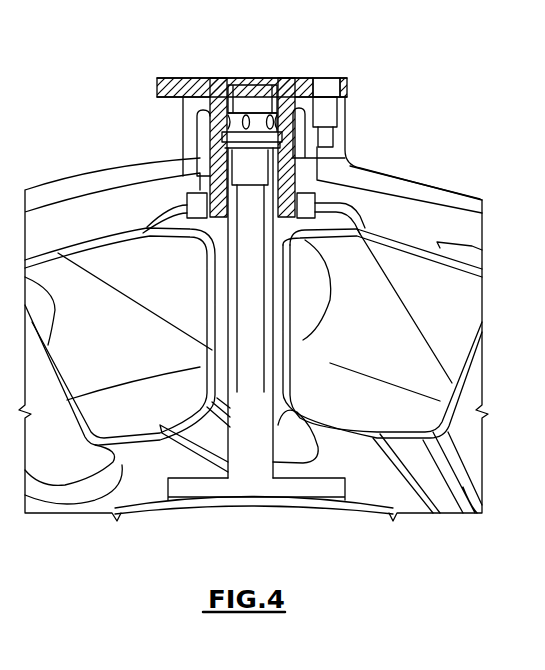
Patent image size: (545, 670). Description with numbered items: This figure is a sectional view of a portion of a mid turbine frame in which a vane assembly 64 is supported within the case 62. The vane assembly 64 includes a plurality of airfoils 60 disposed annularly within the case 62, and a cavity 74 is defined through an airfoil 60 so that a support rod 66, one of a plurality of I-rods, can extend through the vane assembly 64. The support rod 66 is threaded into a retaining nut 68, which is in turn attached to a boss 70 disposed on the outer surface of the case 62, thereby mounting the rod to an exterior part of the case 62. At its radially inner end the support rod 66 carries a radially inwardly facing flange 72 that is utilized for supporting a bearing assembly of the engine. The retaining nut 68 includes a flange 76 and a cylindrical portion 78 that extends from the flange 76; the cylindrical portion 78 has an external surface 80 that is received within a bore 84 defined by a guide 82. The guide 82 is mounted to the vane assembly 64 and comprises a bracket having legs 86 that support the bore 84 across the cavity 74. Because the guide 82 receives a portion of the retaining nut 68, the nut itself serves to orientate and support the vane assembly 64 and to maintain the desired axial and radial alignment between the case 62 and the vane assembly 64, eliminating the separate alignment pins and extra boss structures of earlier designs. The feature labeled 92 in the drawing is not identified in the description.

The airfoils 60 is at (205, 335).
The case 62 is at (88, 187).
The vane assembly 64 is at (445, 452).
The support rod 66 is at (230, 396).
The retaining nut 68 is at (308, 74).
The boss 70 is at (185, 140).
The radially inwardly facing flange 72 is at (200, 488).
The cavity 74 is at (283, 350).
The flange 76 is at (343, 85).
The cylindrical portion 78 is at (312, 147).
The external surface 80 is at (302, 135).
The guide 82 is at (352, 196).
The bore 84 is at (200, 188).
The legs 86 is at (352, 214).
The flange 92 is at (348, 164).